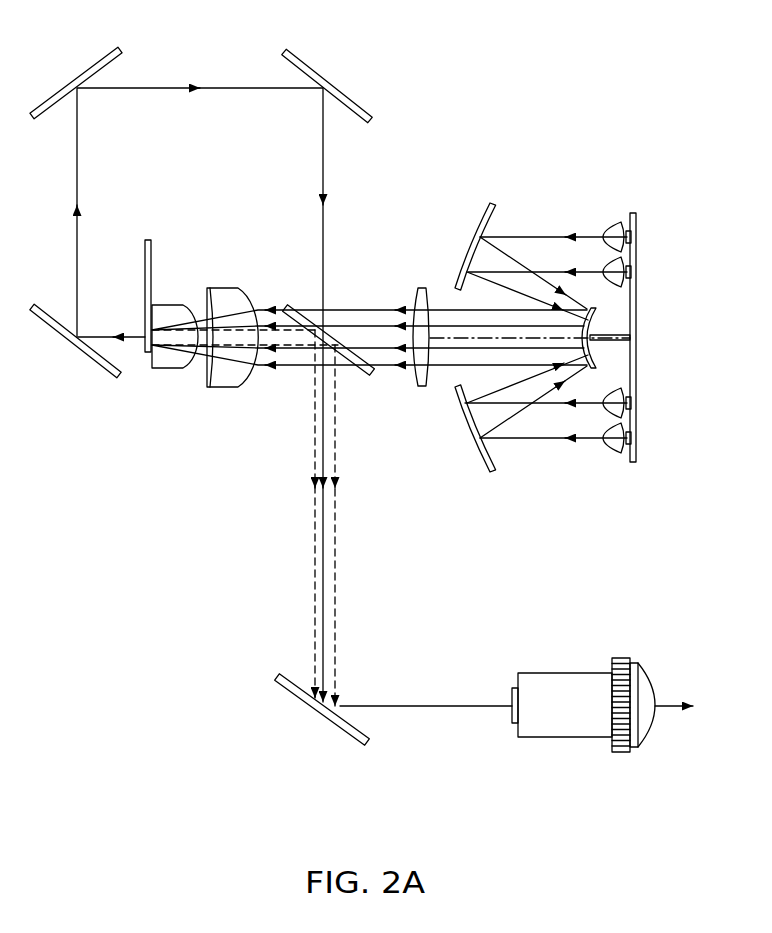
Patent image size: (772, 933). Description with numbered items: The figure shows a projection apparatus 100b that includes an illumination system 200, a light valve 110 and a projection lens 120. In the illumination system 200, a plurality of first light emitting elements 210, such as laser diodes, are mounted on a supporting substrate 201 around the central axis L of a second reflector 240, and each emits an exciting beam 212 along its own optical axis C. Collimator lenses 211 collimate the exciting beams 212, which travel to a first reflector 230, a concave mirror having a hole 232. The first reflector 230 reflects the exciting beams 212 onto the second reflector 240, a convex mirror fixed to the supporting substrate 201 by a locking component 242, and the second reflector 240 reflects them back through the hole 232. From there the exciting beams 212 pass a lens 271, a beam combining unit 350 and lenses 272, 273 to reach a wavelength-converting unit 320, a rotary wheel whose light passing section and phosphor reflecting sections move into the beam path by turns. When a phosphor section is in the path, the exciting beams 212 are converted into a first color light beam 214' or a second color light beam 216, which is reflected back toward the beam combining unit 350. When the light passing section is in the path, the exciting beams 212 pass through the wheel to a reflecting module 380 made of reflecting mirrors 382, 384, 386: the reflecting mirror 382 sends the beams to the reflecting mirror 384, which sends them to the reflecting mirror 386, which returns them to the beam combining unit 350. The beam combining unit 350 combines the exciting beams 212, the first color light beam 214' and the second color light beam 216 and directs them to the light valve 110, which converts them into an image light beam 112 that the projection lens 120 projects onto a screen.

The projection apparatus 100b is at (692, 860).
The light valve 110 is at (357, 735).
The image light beam 112 is at (472, 708).
The projection lens 120 is at (562, 724).
The illumination system 200 is at (127, 403).
The supporting substrate 201 is at (637, 218).
The first light emitting elements 210 is at (632, 236).
The collimator lenses 211 is at (613, 221).
The exciting beams 212 is at (325, 162).
The first color light beam 214' is at (270, 518).
The second color light beam 216 is at (233, 332).
The first reflector 230 is at (478, 228).
The hole 232 is at (458, 293).
The second reflector 240 is at (588, 244).
The locking component 242 is at (615, 335).
The lens 271 is at (412, 293).
The lens 272 is at (222, 286).
The lens 273 is at (168, 303).
The wavelength-converting unit 320 is at (147, 280).
The beam combining unit 350 is at (333, 328).
The reflecting module 380 is at (181, 49).
The reflecting mirror 382 is at (100, 365).
The reflecting mirror 384 is at (63, 96).
The reflecting mirror 386 is at (337, 96).
The optical axis C is at (590, 305).
The central axis L is at (457, 338).